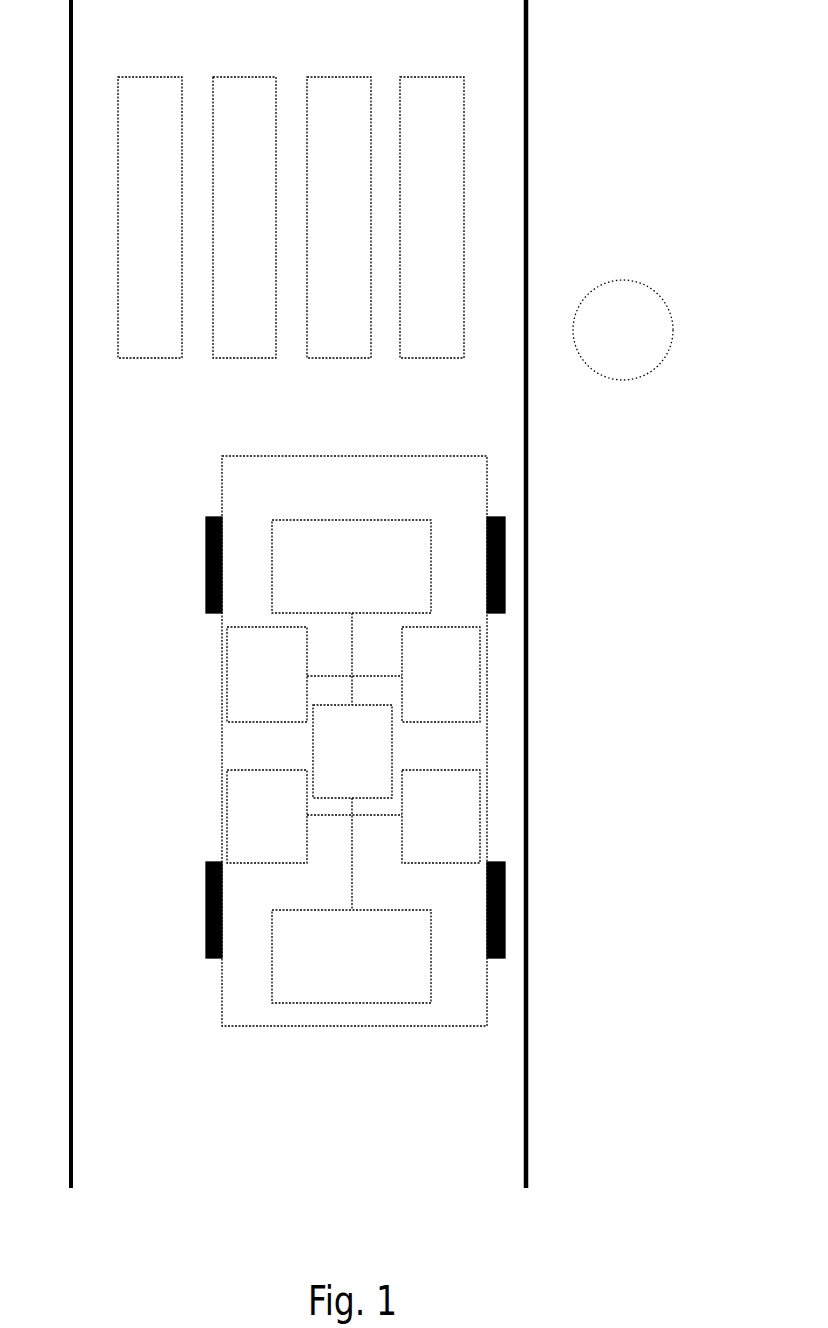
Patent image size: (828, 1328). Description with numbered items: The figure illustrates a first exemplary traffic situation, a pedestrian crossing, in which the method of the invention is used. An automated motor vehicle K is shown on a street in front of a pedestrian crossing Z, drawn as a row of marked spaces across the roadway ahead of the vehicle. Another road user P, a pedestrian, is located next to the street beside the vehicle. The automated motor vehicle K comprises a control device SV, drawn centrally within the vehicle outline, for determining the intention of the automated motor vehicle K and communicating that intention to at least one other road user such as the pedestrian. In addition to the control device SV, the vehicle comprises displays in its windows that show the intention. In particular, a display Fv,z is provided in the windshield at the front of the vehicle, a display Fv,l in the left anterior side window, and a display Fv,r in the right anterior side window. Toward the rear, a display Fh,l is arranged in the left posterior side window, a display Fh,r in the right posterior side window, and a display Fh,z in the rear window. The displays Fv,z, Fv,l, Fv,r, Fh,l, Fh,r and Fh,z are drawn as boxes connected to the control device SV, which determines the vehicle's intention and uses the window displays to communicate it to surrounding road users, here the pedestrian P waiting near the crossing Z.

The pedestrian crossing Z is at (253, 77).
The motor vehicle K is at (353, 457).
The road user P is at (623, 330).
The control device SV is at (352, 751).
The display in the windshield Fv,z is at (351, 566).
The display in the left anterior side window Fv,l is at (267, 674).
The display in the right anterior side window Fv,r is at (441, 674).
The display in the left posterior side window Fh,l is at (267, 816).
The display in the right posterior side window Fh,r is at (441, 816).
The display in the rear window Fh,z is at (351, 956).